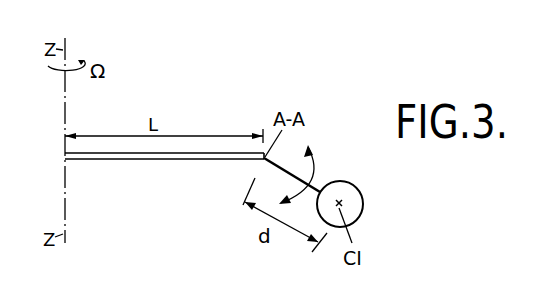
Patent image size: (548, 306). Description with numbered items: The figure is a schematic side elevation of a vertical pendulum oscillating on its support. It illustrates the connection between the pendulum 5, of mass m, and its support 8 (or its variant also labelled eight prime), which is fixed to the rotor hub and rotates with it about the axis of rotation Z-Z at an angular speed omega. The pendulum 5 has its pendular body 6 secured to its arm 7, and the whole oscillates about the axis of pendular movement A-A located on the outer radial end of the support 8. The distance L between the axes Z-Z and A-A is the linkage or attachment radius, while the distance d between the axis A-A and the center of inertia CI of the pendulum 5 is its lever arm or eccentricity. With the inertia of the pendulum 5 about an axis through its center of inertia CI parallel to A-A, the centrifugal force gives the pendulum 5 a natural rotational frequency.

The pendulum 5 is at (364, 194).
The pendular body 6 is at (353, 203).
The arm 7 is at (313, 186).
The support 8 is at (163, 158).